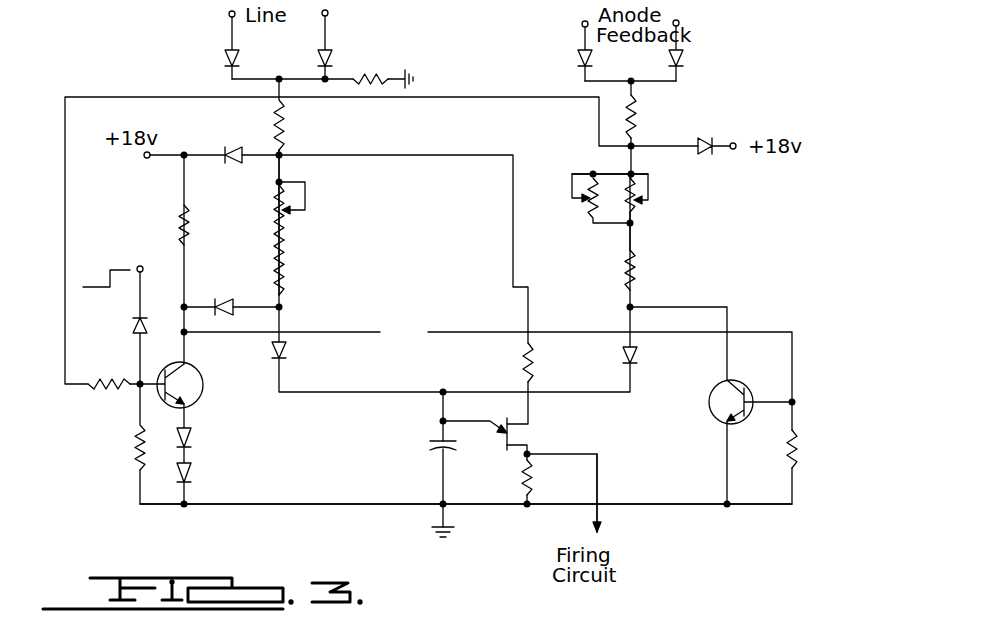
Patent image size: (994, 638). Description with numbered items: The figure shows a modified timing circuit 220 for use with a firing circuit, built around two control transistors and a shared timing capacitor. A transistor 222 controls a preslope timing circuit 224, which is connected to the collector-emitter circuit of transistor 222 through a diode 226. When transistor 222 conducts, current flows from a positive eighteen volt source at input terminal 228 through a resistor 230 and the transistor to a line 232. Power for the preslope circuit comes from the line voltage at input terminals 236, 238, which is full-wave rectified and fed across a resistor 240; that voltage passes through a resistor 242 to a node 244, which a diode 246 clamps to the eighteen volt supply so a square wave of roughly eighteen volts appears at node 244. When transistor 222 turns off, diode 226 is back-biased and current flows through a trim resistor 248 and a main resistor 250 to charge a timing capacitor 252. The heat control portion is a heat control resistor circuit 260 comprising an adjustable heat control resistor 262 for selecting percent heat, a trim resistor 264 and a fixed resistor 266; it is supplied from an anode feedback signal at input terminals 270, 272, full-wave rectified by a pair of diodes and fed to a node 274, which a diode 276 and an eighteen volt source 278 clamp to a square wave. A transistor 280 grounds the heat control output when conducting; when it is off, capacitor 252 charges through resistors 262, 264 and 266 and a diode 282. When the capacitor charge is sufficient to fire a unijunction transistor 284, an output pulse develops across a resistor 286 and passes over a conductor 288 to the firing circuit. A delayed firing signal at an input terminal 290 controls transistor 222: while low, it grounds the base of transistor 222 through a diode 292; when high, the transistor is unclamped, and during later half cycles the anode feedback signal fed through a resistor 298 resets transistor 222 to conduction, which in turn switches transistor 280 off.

The timing circuit 220 is at (447, 256).
The transistor 222 is at (203, 400).
The preslope timing circuit 224 is at (308, 249).
The diode 226 is at (233, 300).
The input terminal 228 is at (145, 158).
The resistor 230 is at (180, 222).
The line 232 is at (345, 505).
The input terminal 236 is at (229, 15).
The input terminal 238 is at (328, 13).
The resistor 240 is at (376, 74).
The resistor 242 is at (284, 124).
The node 244 is at (287, 153).
The diode 246 is at (236, 132).
The trim resistor 248 is at (276, 210).
The main resistor 250 is at (281, 278).
The timing capacitor 252 is at (283, 354).
The heat control resistor circuit 260 is at (608, 258).
The adjustable heat control resistor 262 is at (640, 214).
The trim resistor 264 is at (595, 205).
The fixed resistor 266 is at (640, 268).
The input terminal 270 is at (582, 24).
The input terminal 272 is at (679, 23).
The node 274 is at (633, 150).
The diode 276 is at (712, 140).
The source of 18 volt potential 278 is at (735, 150).
The transistor 280 is at (707, 405).
The diode 282 is at (638, 352).
The unijunction transistor 284 is at (503, 425).
The resistor 286 is at (524, 466).
The conductor 288 is at (600, 520).
The input terminal 290 is at (140, 266).
The diode 292 is at (133, 326).
The resistor 298 is at (97, 390).